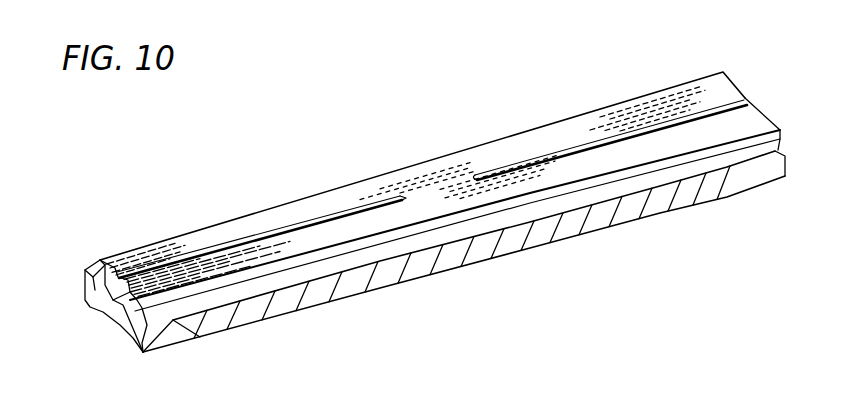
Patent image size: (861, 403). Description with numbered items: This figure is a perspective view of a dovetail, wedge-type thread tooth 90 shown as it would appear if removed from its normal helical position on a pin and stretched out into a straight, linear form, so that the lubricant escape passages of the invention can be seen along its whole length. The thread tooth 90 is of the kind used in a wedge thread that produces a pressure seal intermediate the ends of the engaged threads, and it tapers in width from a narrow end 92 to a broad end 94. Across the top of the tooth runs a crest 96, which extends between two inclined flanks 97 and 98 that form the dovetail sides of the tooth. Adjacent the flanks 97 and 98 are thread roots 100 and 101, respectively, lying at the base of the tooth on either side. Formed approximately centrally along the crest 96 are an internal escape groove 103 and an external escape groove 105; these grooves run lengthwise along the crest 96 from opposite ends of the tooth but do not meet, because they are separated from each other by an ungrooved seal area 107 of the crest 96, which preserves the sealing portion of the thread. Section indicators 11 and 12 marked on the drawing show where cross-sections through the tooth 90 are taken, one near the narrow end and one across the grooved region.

The thread tooth 90 is at (214, 155).
The narrow end 92 is at (263, 205).
The broad end 94 is at (695, 74).
The crest 96 is at (748, 123).
The inclined flank 97 is at (88, 268).
The inclined flank 98 is at (126, 333).
The thread root 100 is at (84, 274).
The thread root 101 is at (203, 323).
The internal escape groove 103 is at (325, 218).
The external escape groove 105 is at (568, 150).
The ungrooved seal area 107 is at (450, 177).
The section line 11- 11 is at (111, 203).
The section line 12- 12 is at (383, 131).